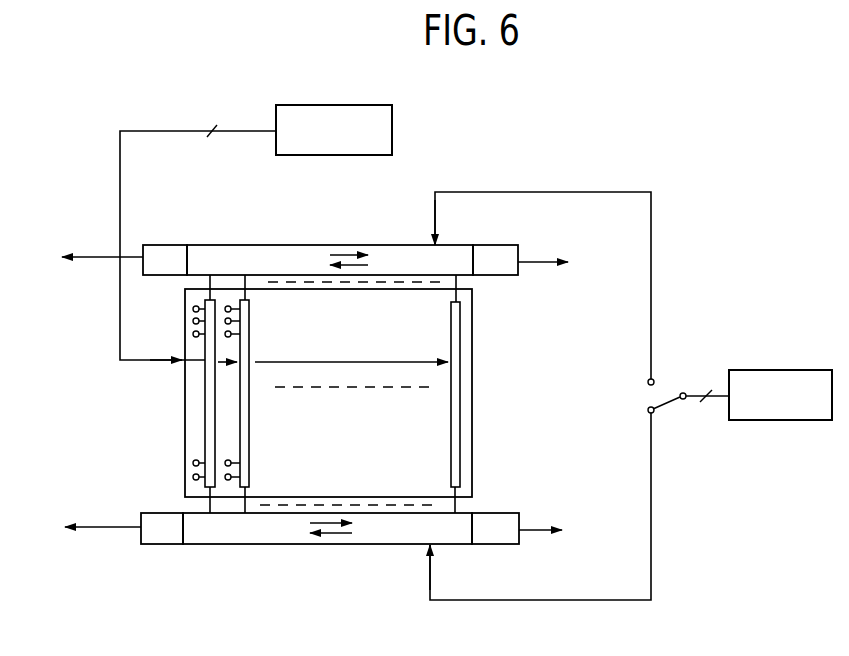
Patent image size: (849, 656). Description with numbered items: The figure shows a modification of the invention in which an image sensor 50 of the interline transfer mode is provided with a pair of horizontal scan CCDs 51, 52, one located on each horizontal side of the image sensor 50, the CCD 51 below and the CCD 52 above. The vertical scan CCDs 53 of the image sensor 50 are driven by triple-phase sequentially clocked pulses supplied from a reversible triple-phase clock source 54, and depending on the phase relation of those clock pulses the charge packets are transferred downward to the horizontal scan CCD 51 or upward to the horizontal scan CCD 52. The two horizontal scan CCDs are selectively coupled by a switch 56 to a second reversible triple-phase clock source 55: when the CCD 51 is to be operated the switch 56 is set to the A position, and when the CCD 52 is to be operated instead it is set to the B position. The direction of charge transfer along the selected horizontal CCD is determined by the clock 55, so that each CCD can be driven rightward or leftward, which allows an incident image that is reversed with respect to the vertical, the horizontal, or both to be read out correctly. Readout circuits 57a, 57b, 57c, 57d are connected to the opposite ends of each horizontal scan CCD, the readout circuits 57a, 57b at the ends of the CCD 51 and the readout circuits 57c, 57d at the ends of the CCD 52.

The image sensor 50 is at (515, 385).
The horizontal scan CCD 51 is at (307, 544).
The horizontal scan CCD 52 is at (295, 245).
The vertical scan CCDs 53 is at (208, 345).
The reversible triple-phase clock source 54 is at (313, 105).
The reversible triple-phase clock source 55 is at (762, 370).
The switch 56 is at (668, 406).
The readout circuit 57a is at (165, 544).
The readout circuit 57b is at (498, 545).
The readout circuit 57c is at (158, 245).
The readout circuit 57d is at (495, 245).
The A position A is at (648, 413).
The B position B is at (646, 380).